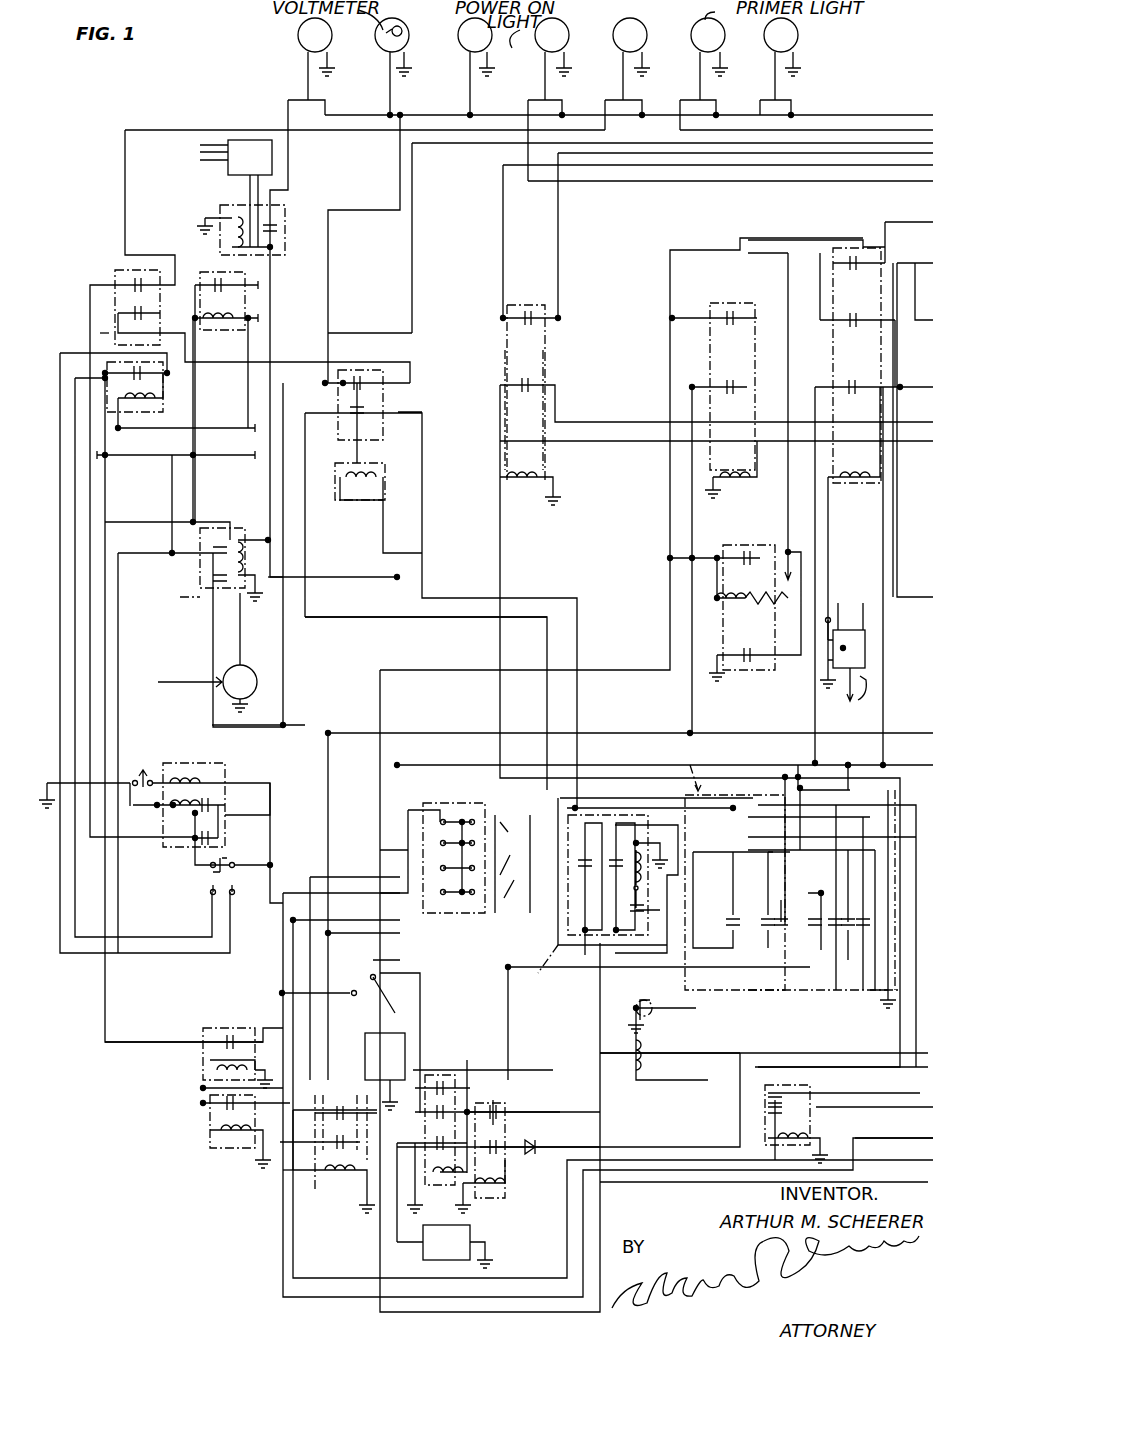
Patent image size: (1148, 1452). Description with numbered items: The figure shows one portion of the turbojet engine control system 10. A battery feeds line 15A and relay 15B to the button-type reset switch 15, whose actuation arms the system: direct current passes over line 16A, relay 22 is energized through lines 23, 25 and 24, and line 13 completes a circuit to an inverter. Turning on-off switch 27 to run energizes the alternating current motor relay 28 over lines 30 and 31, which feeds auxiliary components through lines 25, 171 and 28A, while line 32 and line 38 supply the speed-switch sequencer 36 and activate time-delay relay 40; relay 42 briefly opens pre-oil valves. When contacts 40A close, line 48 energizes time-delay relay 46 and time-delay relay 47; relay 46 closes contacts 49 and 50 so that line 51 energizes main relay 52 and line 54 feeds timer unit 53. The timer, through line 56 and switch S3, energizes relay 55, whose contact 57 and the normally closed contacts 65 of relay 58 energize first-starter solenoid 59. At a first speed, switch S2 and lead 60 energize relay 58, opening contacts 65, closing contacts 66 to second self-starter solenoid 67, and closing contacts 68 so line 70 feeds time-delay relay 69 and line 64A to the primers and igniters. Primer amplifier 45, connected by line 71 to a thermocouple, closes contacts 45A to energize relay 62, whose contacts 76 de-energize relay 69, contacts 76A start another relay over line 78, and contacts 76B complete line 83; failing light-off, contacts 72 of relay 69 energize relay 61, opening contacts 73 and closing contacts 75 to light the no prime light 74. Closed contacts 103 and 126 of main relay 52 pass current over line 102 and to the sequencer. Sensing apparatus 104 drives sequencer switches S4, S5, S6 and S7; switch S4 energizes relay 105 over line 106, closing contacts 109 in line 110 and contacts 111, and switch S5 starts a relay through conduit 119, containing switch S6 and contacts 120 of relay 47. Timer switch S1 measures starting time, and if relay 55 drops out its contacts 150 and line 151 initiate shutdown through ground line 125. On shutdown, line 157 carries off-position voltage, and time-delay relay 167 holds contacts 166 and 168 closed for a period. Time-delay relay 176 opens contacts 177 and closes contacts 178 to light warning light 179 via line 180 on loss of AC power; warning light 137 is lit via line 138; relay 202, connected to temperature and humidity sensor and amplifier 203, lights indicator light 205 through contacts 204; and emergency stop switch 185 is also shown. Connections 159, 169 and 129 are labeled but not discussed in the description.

The control system 10 is at (185, 86).
The indicator light 205 is at (304, 42).
The warning light 137 is at (566, 24).
The warning light 179 is at (644, 24).
The no prime light 74 is at (799, 35).
The ground line 125 is at (818, 130).
The line 111 is at (893, 150).
The line 138 is at (891, 183).
The line 180 is at (124, 172).
The temperature and humidity sensor and amplifier 203 is at (230, 180).
The relay 202 is at (290, 203).
The contacts 204 is at (291, 230).
The time-delay relay 176 is at (118, 250).
The contacts 178 is at (134, 282).
The contacts 177 is at (116, 309).
The relay 22 is at (97, 330).
The relay 42 is at (203, 260).
The contacts 103 is at (368, 368).
The line 102 is at (313, 384).
The contacts 126 is at (351, 416).
The main relay 52 is at (346, 504).
The electrical lead 60 is at (422, 484).
The line 51 is at (338, 596).
The conductor 169 is at (294, 606).
The line 24 is at (167, 400).
The line 23 is at (116, 424).
The line 25 is at (96, 458).
The line 171 is at (172, 490).
The line 28A is at (193, 518).
The contacts 166 is at (210, 564).
The time-delay relay 167 is at (180, 598).
The contacts 168 is at (203, 596).
The line 13 is at (294, 724).
The contacts 109 is at (504, 385).
The line 110 is at (548, 380).
The relay 105 is at (501, 456).
The line 106 is at (500, 530).
The line 70 is at (482, 670).
The conductor 159 is at (448, 716).
The relay 61 is at (714, 300).
The contacts 73 is at (728, 326).
The contacts 75 is at (721, 426).
The time-delay relay 69 is at (710, 628).
The contacts 72 is at (752, 670).
The line 64A is at (812, 240).
The relay 62 is at (866, 240).
The contacts 76 is at (845, 290).
The contacts 76A is at (845, 345).
The contacts 76B is at (873, 564).
The line 83 is at (904, 372).
The line 78 is at (894, 524).
The primer amplifier 45 is at (868, 638).
The contacts 45A is at (843, 648).
The line 71 is at (861, 716).
The switch 185 is at (143, 779).
The relay 15B is at (227, 772).
The line 15A is at (128, 826).
The reset switch 15 is at (204, 882).
The line 16A is at (345, 900).
The line 31 is at (282, 966).
The line 30 is at (340, 944).
The line 32 is at (298, 810).
The first-starter solenoid 59 is at (616, 986).
The contacts 50 is at (340, 1102).
The alternating current motor relay 28 is at (194, 1062).
The contacts 40A is at (217, 1110).
The time-delay relay 40 is at (208, 1155).
The line 48 is at (286, 1216).
The contacts 49 is at (326, 1160).
The time-delay relay 46 is at (352, 1196).
The line 157 is at (380, 1244).
The on-off switch 27 is at (523, 889).
The line 54 is at (458, 946).
The relay 58 is at (585, 860).
The timer switch S1 is at (614, 862).
The timer unit 53 is at (542, 974).
The line 56 is at (598, 940).
The sequencer 36 is at (695, 760).
The line 38 is at (808, 776).
The conductor 129 is at (870, 788).
The sequencer switch S2 is at (730, 918).
The sequencer switch S3 is at (767, 918).
The sequencer switch S4 is at (802, 913).
The sequencer switch S5 is at (805, 950).
The sequencer switch S6 is at (832, 955).
The switch contact S7 is at (850, 950).
The sensing apparatus 104 is at (668, 1047).
The electrical conduit 119 is at (752, 1086).
The contacts 120 is at (770, 1106).
The time-delay relay 47 is at (817, 1112).
The line 151 is at (874, 1052).
The contacts 68 is at (443, 1082).
The contacts 65 is at (442, 1090).
The contacts 66 is at (429, 1142).
The contact 57 is at (515, 1122).
The contacts 150 is at (510, 1166).
The relay 55 is at (484, 1198).
The second self-starter solenoid 67 is at (445, 1246).